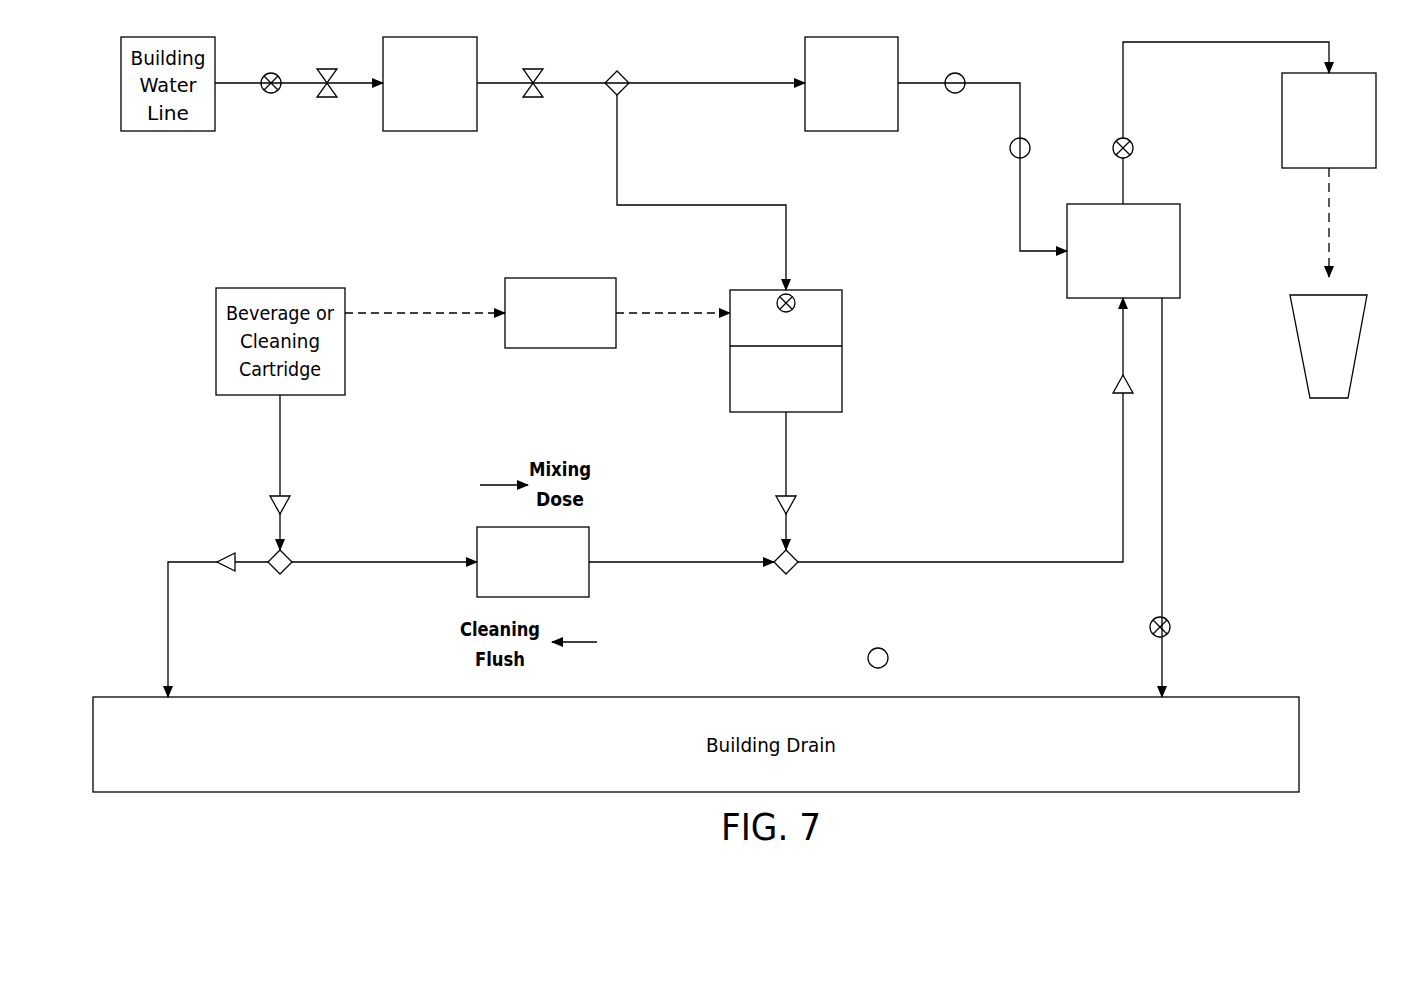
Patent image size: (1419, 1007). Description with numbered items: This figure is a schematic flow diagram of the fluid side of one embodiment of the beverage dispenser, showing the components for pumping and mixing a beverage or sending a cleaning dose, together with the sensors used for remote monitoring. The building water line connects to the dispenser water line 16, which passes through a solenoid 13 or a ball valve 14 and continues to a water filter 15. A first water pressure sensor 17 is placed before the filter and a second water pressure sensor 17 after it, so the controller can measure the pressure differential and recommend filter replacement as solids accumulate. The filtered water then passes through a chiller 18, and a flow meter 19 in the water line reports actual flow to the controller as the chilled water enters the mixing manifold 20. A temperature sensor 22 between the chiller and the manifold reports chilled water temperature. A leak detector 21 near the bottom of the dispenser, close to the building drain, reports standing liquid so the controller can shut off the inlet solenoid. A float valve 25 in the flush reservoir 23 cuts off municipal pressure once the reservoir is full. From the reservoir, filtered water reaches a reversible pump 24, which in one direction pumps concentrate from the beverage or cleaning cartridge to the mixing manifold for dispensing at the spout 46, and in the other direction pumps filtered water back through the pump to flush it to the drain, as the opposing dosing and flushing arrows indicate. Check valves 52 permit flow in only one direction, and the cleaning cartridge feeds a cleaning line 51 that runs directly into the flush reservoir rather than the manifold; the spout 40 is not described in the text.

The solenoid 13 is at (1133, 148).
The ball valve 14 is at (271, 93).
The water filter 15 is at (430, 37).
The water line 16 is at (239, 83).
The water pressure sensor 17 is at (327, 69).
The chiller 18 is at (851, 37).
The flow meter 19 is at (955, 73).
The mixing manifold 20 is at (1180, 244).
The leak detector 21 is at (888, 658).
The temperature sensor 22 is at (1030, 148).
The flush reservoir 23 is at (842, 373).
The pump 24 is at (617, 330).
The float valve 25 is at (796, 303).
The spout 40 is at (1376, 104).
The spout 46 is at (1360, 340).
The cleaning line 51 is at (411, 313).
The check valve 52 is at (290, 503).